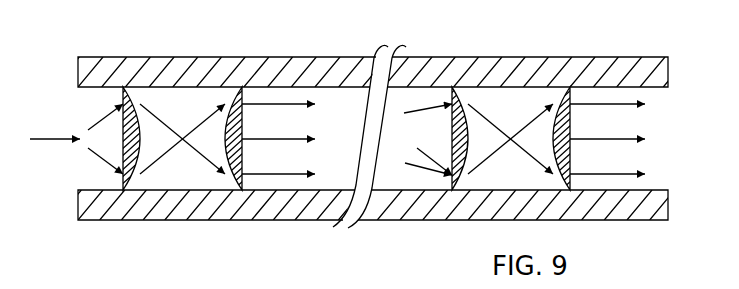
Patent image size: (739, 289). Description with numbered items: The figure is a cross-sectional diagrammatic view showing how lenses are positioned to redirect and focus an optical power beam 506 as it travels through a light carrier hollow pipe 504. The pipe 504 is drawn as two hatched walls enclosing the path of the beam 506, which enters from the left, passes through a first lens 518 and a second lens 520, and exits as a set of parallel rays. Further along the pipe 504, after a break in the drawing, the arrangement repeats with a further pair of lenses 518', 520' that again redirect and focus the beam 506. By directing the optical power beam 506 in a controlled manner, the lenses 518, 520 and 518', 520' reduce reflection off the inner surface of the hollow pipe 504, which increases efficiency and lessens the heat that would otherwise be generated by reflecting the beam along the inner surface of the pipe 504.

The light carrier hollow pipe 504 is at (371, 56).
The optical power beam 506 is at (365, 219).
The lens 518 is at (93, 112).
The lens 520 is at (199, 112).
The first lens of subsequent stage 518' is at (421, 107).
The second lens of subsequent stage 520' is at (528, 113).